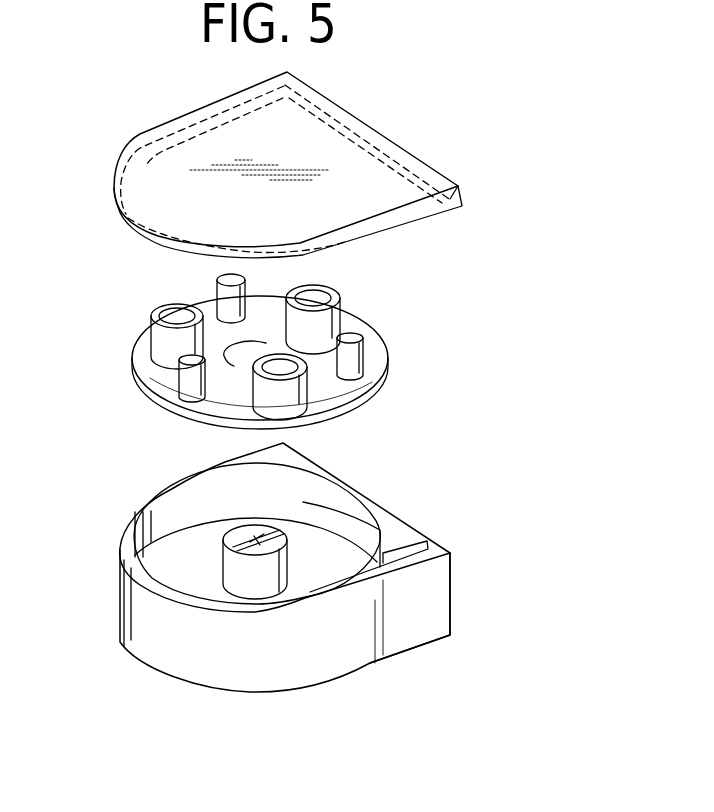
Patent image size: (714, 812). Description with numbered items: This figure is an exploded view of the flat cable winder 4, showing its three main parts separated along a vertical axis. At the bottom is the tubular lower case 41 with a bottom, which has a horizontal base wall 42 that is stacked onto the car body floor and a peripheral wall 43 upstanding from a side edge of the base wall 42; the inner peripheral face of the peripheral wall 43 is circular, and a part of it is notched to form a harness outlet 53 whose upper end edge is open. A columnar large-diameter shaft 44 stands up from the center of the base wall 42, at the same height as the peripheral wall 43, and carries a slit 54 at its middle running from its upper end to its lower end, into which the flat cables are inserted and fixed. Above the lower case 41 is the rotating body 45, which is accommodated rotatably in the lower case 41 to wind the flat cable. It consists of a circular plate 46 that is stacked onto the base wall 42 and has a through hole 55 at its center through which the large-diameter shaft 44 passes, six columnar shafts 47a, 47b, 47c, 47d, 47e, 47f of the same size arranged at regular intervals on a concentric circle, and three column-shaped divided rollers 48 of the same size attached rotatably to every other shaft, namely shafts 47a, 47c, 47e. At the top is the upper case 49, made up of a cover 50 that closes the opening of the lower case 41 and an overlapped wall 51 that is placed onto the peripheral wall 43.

The flat cable winder 4 is at (558, 348).
The lower case 41 is at (318, 591).
The base wall 42 is at (327, 563).
The peripheral wall 43 is at (305, 503).
The large-diameter shaft 44 is at (247, 568).
The rotating body 45 is at (387, 343).
The circular plate 46 is at (232, 368).
The shaft 47a is at (317, 298).
The shaft 47b is at (237, 287).
The shaft 47c is at (183, 318).
The shaft 47d is at (180, 378).
The shaft 47e is at (297, 363).
The shaft 47f is at (363, 360).
The divided roller 48 is at (170, 338).
The upper case 49 is at (336, 165).
The cover 50 is at (373, 163).
The overlapped wall 51 is at (316, 199).
The harness outlet 53 is at (437, 547).
The slit 54 is at (262, 538).
The through hole 55 is at (244, 412).